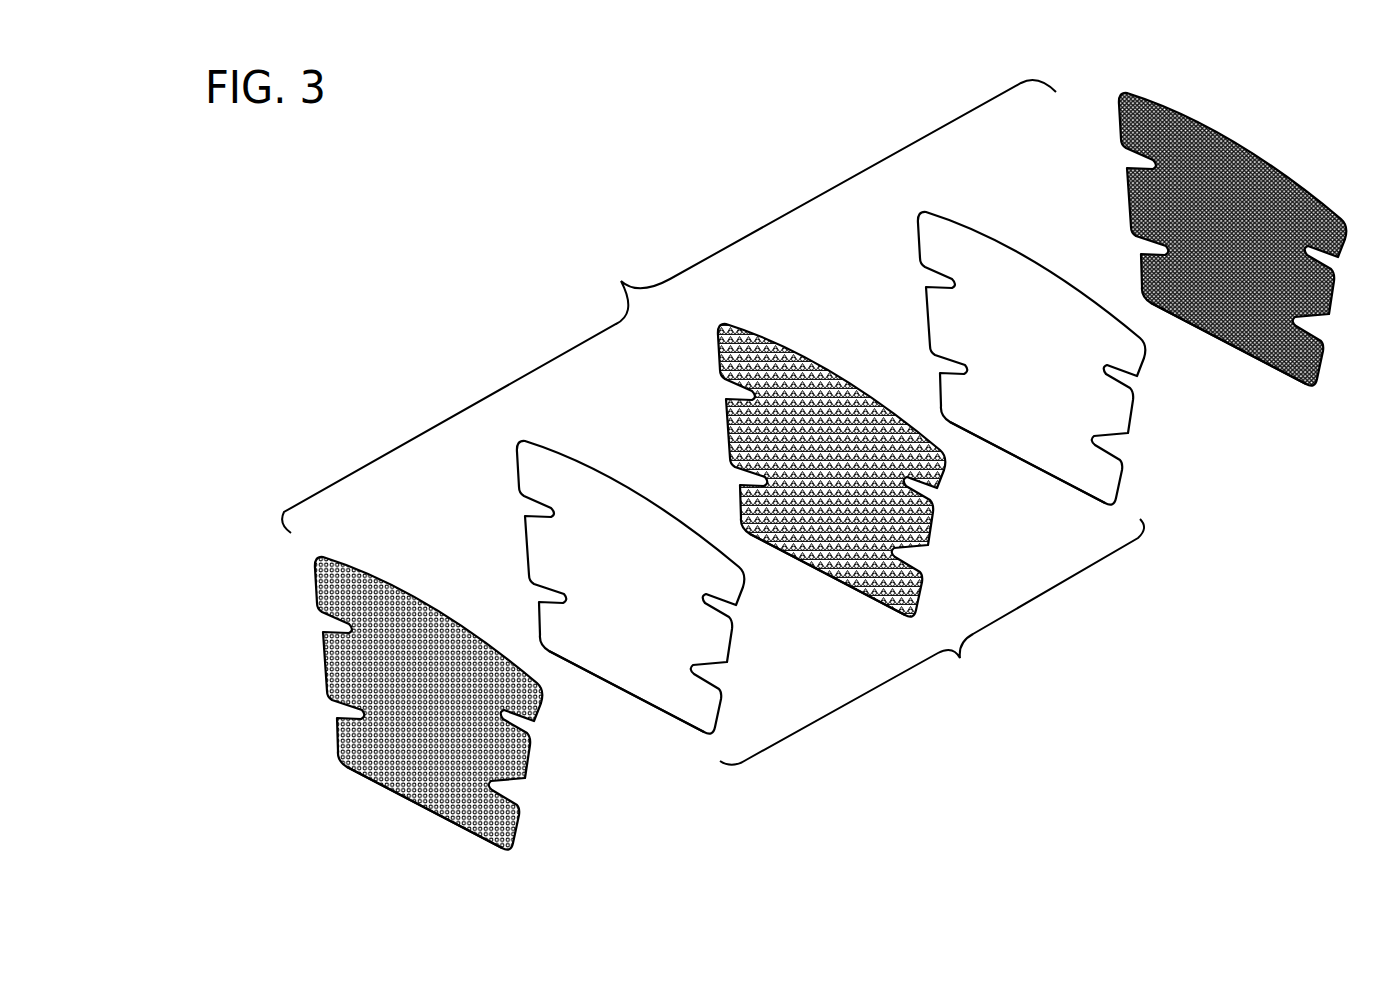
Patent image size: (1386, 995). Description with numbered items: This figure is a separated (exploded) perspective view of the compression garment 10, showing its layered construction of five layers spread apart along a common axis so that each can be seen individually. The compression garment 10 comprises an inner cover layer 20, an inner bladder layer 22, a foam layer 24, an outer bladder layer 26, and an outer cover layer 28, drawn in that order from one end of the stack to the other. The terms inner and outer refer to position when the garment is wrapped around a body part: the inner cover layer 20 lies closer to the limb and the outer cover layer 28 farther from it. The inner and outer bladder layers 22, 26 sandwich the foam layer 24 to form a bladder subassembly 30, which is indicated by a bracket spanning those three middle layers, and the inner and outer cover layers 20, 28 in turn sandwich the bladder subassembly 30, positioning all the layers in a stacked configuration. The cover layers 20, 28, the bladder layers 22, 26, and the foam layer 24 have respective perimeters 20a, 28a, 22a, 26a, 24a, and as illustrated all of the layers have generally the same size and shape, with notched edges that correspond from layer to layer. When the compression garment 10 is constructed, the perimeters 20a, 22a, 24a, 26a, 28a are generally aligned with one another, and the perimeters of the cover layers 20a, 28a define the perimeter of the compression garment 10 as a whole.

The compression garment 10 is at (669, 306).
The bladder subassembly 30 is at (932, 642).
The inner cover layer 20 is at (1232, 254).
The perimeter of inner cover layer 20a is at (1228, 359).
The inner bladder layer 22 is at (1020, 432).
The perimeter of inner bladder layer 22a is at (1065, 476).
The foam layer 24 is at (831, 485).
The perimeter of foam layer 24a is at (827, 590).
The outer bladder layer 26 is at (630, 602).
The perimeter of outer bladder layer 26a is at (626, 707).
The outer cover layer 28 is at (391, 770).
The perimeter of outer cover layer 28a is at (428, 801).